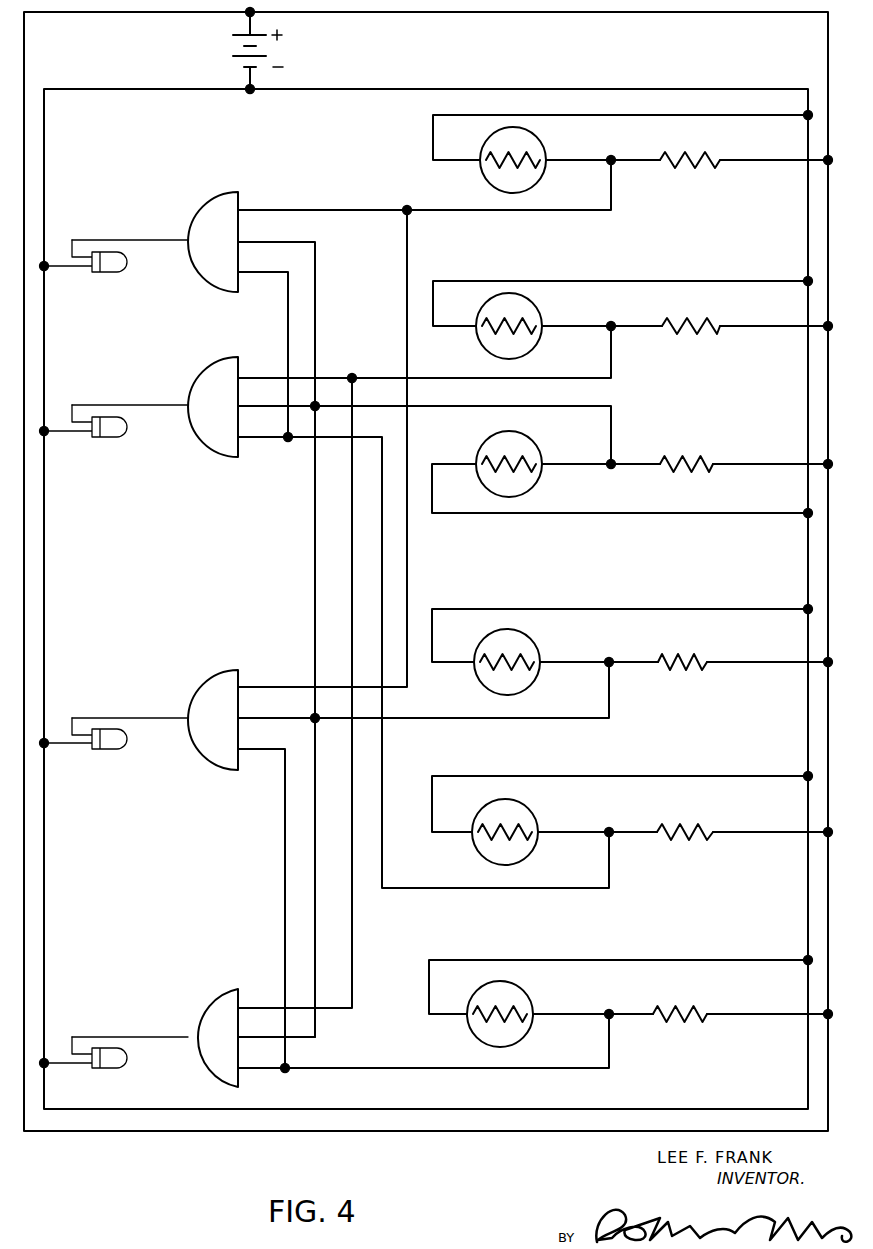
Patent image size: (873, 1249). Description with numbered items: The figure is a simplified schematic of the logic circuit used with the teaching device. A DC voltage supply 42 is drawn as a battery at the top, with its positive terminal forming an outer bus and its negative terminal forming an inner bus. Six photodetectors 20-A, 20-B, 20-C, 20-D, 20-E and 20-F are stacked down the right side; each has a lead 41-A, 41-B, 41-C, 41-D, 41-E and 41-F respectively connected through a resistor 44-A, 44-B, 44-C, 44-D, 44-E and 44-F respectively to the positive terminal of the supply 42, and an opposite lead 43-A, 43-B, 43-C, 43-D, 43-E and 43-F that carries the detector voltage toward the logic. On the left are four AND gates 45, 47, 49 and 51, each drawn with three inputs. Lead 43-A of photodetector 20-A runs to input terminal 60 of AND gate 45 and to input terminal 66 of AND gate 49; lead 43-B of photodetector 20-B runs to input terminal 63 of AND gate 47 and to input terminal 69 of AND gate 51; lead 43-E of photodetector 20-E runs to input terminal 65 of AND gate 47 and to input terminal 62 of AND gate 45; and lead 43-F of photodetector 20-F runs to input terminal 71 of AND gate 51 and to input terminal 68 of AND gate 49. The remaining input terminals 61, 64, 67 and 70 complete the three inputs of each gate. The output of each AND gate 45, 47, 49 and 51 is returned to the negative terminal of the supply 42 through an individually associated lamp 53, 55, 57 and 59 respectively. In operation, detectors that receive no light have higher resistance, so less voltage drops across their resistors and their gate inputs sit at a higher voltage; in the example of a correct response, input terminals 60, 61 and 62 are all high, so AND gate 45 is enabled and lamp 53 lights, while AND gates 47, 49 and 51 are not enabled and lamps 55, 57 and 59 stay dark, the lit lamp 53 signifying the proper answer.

The DC voltage supply 42 is at (281, 55).
The AND gate 45 is at (218, 197).
The AND gate 47 is at (203, 368).
The AND gate 49 is at (203, 682).
The AND gate 51 is at (204, 997).
The lamp 53 is at (127, 272).
The lamp 55 is at (125, 433).
The lamp 57 is at (125, 745).
The lamp 59 is at (120, 1066).
The input terminal 60 is at (424, 187).
The input terminal 61 is at (276, 629).
The input terminal 62 is at (263, 344).
The input terminal 63 is at (424, 354).
The input terminal 64 is at (424, 424).
The input terminal 65 is at (423, 652).
The input terminal 66 is at (322, 448).
The input terminal 67 is at (423, 692).
The input terminal 68 is at (261, 898).
The input terminal 69 is at (295, 693).
The input terminal 70 is at (276, 1026).
The input terminal 71 is at (423, 1043).
The photodetector 20-A is at (491, 136).
The photodetector 20-B is at (489, 300).
The photodetector 20-C is at (494, 437).
The photodetector 20-D is at (493, 634).
The photodetector 20-E is at (497, 803).
The photodetector 20-F is at (494, 984).
The lead 41-A is at (455, 163).
The lead 41-B is at (453, 329).
The lead 41-C is at (456, 514).
The lead 41-D is at (454, 664).
The lead 41-E is at (462, 834).
The lead 41-F is at (452, 1016).
The lead 43-A is at (570, 158).
The lead 43-B is at (570, 325).
The lead 43-C is at (553, 462).
The lead 43-D is at (559, 660).
The lead 43-E is at (563, 830).
The lead 43-F is at (580, 1010).
The resistor 44-A is at (687, 153).
The resistor 44-B is at (686, 320).
The resistor 44-C is at (683, 457).
The resistor 44-D is at (683, 655).
The resistor 44-E is at (700, 828).
The resistor 44-F is at (693, 1008).